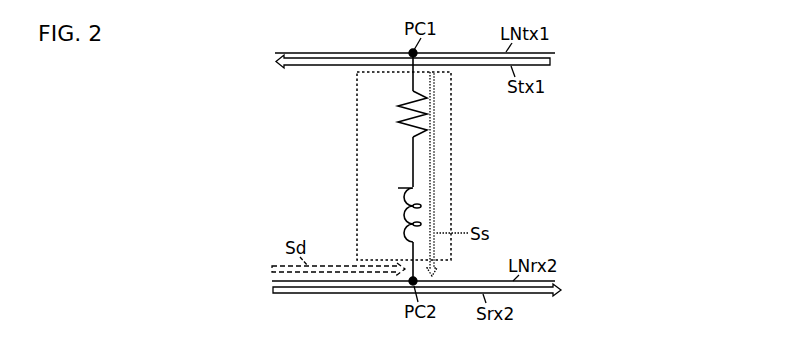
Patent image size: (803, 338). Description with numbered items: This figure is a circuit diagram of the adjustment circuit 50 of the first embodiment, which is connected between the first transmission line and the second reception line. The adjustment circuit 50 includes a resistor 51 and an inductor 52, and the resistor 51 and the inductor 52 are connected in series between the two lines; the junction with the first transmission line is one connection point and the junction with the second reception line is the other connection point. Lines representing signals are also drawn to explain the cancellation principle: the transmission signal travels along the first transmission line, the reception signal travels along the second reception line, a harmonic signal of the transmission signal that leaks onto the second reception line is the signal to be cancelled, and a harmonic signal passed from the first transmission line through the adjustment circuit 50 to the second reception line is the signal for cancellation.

The adjustment circuit 50 is at (357, 99).
The resistor 51 is at (401, 101).
The inductor 52 is at (398, 188).